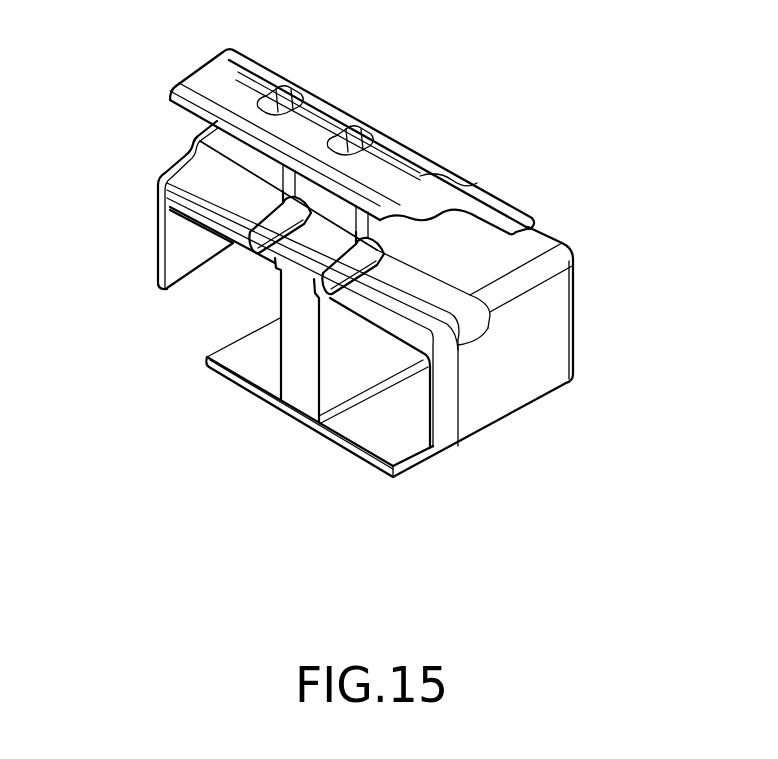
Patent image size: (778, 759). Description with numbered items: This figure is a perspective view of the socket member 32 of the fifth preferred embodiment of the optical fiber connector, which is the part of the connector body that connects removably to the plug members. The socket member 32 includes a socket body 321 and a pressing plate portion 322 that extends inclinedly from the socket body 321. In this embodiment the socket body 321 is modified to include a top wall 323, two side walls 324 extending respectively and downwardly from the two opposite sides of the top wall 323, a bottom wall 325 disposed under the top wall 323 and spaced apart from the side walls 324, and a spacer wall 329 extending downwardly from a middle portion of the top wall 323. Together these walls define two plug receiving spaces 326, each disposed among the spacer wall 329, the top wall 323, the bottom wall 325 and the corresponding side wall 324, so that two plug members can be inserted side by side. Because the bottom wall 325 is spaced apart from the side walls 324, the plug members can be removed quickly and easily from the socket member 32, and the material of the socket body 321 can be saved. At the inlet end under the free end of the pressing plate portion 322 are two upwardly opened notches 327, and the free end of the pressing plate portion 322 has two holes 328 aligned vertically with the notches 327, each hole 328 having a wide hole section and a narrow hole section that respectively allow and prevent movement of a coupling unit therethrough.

The socket member 32 is at (548, 158).
The socket body 321 is at (521, 404).
The pressing plate portion 322 is at (194, 84).
The top wall 323 is at (538, 243).
The side walls 324 is at (158, 228).
The bottom wall 325 is at (366, 463).
The plug receiving spaces 326 is at (210, 318).
The notches 327 is at (240, 218).
The holes 328 is at (287, 97).
The spacer wall 329 is at (283, 362).